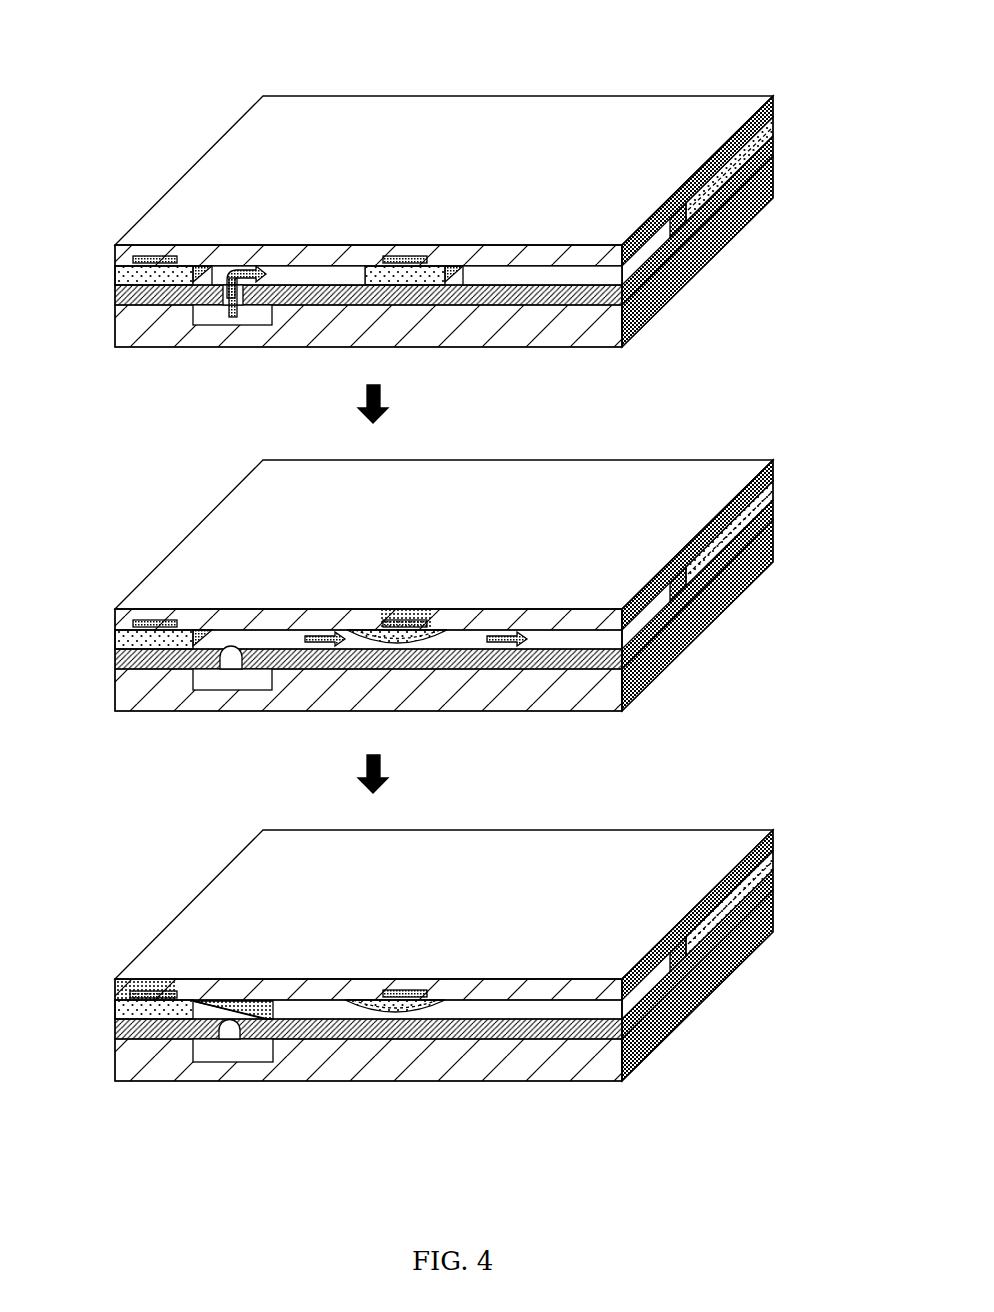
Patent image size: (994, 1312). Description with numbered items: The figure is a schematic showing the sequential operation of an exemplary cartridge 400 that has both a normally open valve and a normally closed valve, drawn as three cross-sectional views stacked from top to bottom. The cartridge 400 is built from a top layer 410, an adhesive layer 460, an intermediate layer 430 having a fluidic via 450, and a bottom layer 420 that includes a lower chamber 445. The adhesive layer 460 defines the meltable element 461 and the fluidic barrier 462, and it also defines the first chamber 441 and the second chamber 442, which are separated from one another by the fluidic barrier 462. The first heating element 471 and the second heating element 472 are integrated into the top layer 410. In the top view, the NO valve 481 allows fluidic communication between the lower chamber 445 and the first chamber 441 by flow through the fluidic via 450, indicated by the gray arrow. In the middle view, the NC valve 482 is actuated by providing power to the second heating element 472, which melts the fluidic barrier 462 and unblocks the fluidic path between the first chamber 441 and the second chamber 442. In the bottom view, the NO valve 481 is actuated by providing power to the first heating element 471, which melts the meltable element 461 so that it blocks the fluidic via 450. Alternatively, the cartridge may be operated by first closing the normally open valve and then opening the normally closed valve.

The cartridge 400 is at (780, 57).
The top layer 410 is at (108, 245).
The adhesive layer 460 is at (108, 267).
The intermediate layer 430 is at (108, 286).
The bottom layer 420 is at (108, 307).
The first chamber 441 is at (314, 273).
The second chamber 442 is at (497, 273).
The lower chamber 445 is at (212, 326).
The fluidic via 450 is at (242, 295).
The NC valve 482 is at (467, 580).
The second heating element 472 is at (432, 622).
The fluidic barrier 462 is at (418, 641).
The NO valve 481 is at (195, 958).
The first heating element 471 is at (128, 993).
The meltable element 461 is at (112, 1012).